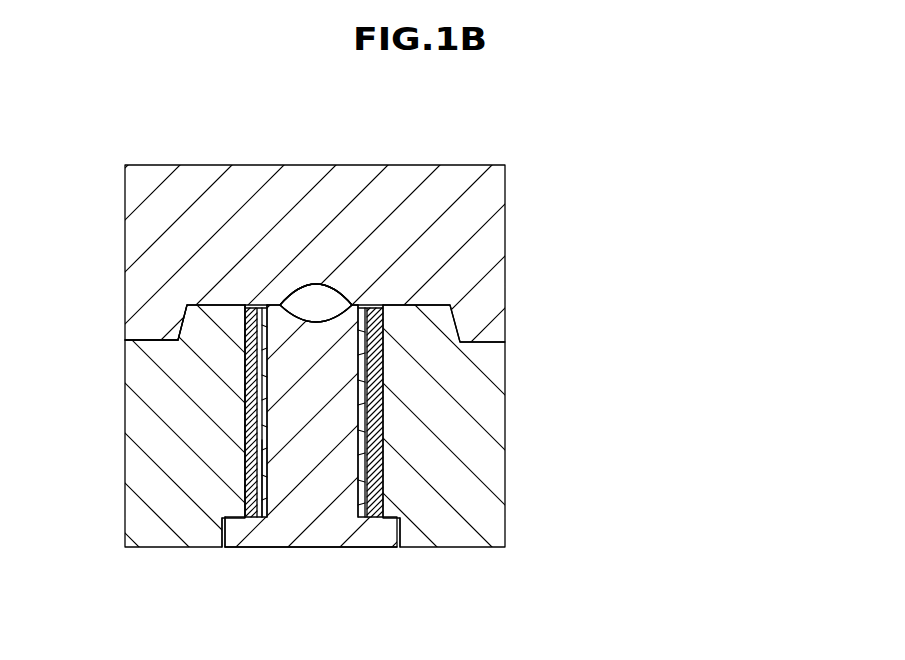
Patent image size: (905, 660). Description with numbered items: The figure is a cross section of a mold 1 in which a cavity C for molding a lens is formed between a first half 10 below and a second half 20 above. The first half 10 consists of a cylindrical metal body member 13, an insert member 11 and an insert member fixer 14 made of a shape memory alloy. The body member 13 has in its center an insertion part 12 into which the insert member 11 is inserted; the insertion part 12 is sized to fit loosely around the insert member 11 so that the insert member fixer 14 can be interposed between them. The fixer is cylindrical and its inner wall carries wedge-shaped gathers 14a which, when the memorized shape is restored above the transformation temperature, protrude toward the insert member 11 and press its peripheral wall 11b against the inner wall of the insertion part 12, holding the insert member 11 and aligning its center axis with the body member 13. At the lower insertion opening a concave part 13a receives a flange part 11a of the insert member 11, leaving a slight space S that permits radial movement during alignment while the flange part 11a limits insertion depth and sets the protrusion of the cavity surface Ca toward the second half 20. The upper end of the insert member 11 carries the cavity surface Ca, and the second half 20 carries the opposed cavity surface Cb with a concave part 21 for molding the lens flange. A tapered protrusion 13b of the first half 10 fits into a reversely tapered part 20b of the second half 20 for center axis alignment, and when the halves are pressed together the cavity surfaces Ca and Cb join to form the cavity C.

The mold 1 is at (452, 330).
The second half 20 is at (406, 330).
The concave part 21 is at (282, 299).
The reversely tapered part 20b is at (135, 318).
The first half 10 is at (452, 330).
The body member 13 is at (412, 330).
The concave part 13a is at (398, 530).
The tapered protrusion 13b is at (177, 341).
The insertion part 12 is at (452, 330).
The insert member 11 is at (390, 411).
The flange part 11a is at (287, 532).
The peripheral wall 11b is at (245, 452).
The insert member fixer 14 is at (501, 475).
The gather 14a is at (247, 457).
The cavity C is at (352, 300).
The cavity surface Ca is at (283, 300).
The cavity surface Cb is at (305, 283).
The space S is at (222, 550).